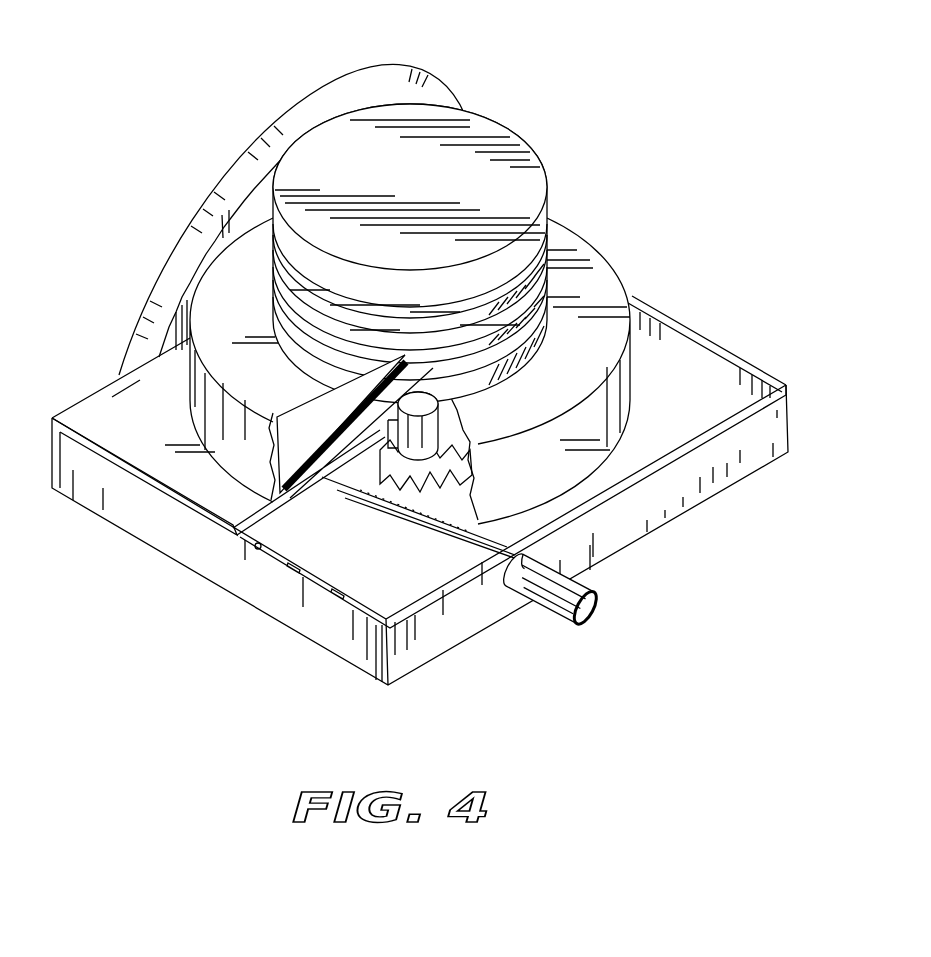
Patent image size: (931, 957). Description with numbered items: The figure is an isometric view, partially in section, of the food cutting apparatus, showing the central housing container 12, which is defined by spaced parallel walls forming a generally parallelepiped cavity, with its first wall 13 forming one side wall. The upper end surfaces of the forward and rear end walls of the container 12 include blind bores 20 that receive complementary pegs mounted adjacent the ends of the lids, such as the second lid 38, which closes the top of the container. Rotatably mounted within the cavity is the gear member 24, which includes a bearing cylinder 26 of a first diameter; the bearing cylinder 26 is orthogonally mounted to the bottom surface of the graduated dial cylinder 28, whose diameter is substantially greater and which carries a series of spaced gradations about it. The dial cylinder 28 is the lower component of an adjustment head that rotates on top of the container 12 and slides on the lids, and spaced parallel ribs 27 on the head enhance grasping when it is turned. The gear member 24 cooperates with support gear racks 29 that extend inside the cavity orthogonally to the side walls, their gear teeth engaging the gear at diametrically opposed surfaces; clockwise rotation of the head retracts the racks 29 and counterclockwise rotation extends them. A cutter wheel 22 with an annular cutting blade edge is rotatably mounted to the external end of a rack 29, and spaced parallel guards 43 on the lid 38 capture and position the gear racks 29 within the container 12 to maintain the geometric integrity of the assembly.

The central housing container 12 is at (716, 340).
The first wall 13 is at (622, 528).
The blind bores 20 is at (650, 312).
The second cutter wheel 22 is at (428, 80).
The gear member 24 is at (392, 455).
The bearing cylinder 26 is at (436, 427).
The spaced parallel ribs 27 is at (548, 258).
The graduated dial cylinder 28 is at (545, 470).
The support gear racks 29 is at (537, 612).
The second lid 38 is at (112, 397).
The second pair of spaced parallel guards 43 is at (253, 537).